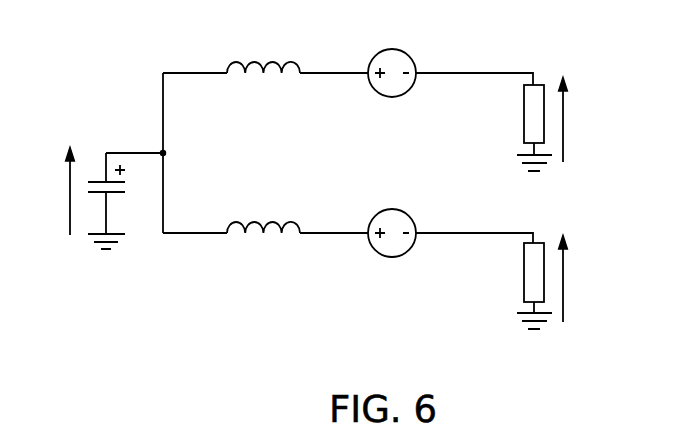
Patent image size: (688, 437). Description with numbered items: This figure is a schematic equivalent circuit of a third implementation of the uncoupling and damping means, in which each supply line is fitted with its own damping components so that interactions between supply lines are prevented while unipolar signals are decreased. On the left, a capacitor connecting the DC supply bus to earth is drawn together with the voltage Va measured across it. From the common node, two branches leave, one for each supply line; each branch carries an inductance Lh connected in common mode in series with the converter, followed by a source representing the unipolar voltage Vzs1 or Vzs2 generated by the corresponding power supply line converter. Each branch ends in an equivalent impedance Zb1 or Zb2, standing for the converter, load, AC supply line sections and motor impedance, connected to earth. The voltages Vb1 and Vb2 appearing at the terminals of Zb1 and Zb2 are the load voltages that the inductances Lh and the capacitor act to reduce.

The input voltage source (capacitor) Va is at (78, 198).
The inductance Lh is at (263, 131).
The unipolar voltage Vzs1 is at (391, 57).
The unipolar voltage Vzs2 is at (391, 215).
The equivalent impedance Zb1 is at (513, 128).
The equivalent impedance Zb2 is at (513, 286).
The voltage at impedance terminals Vb1 is at (584, 119).
The voltage at impedance terminals Vb2 is at (584, 278).